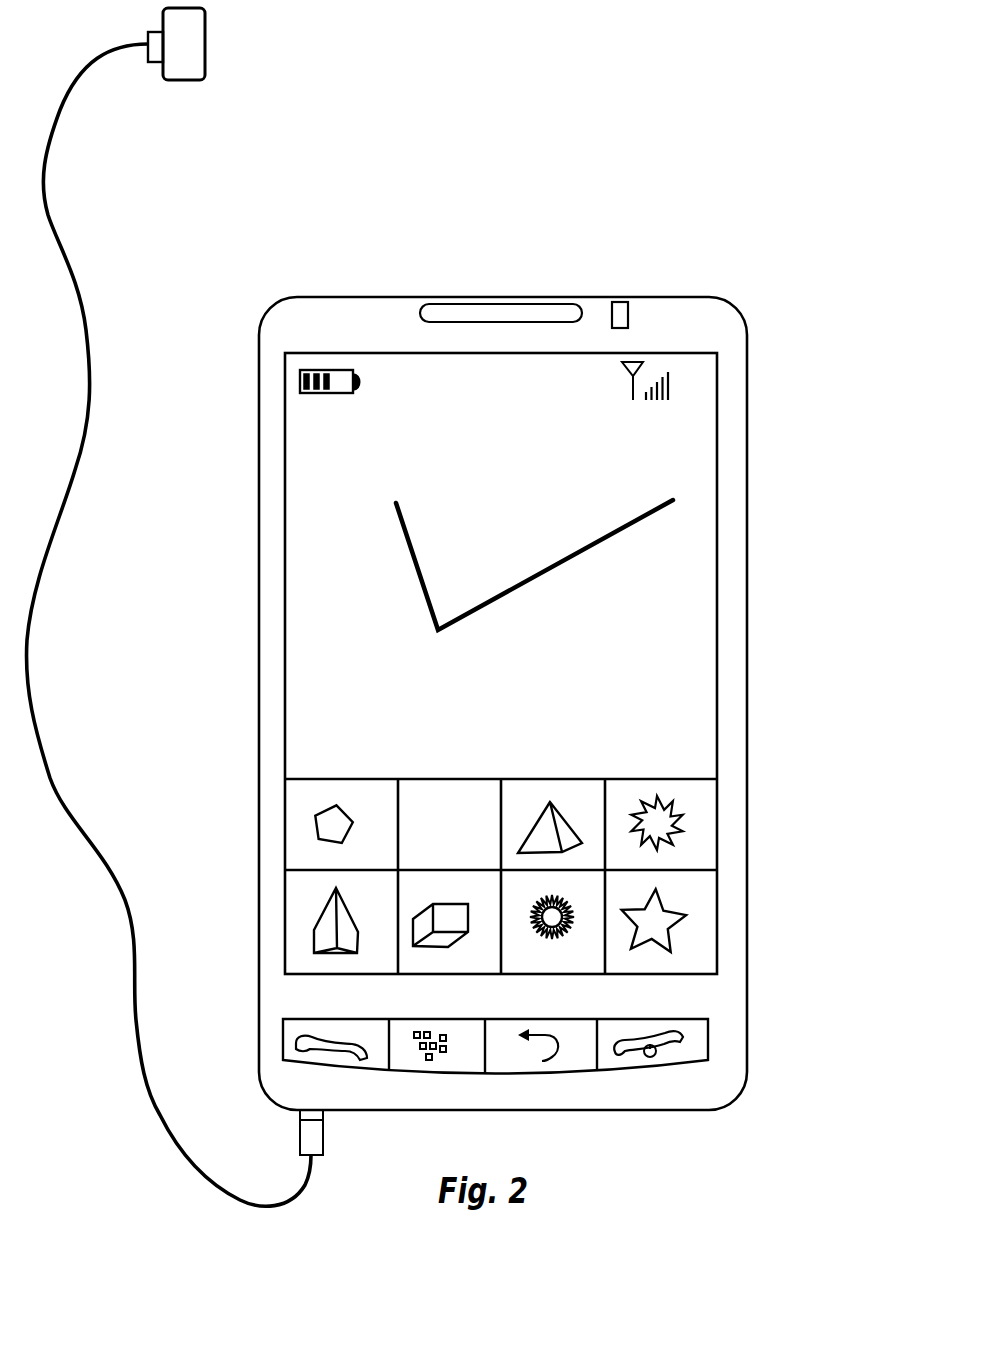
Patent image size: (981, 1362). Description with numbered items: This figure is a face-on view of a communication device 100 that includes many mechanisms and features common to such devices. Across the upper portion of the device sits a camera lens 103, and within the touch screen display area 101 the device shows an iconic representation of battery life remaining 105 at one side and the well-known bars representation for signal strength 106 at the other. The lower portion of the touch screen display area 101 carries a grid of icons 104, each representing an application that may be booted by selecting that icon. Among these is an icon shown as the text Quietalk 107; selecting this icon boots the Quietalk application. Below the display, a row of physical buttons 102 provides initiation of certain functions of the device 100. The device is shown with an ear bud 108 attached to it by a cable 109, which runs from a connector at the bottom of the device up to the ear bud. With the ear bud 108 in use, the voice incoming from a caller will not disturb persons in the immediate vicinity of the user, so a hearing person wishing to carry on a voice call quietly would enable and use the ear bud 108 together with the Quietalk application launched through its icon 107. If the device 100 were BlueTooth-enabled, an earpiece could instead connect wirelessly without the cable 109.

The device 100 is at (465, 160).
The touch screen display area 101 is at (295, 584).
The physical buttons 102 is at (725, 1043).
The camera lens 103 is at (503, 305).
The icons 104 is at (735, 840).
The iconic representation of battery life remaining 105 is at (335, 362).
The bars representation for signal strength 106 is at (657, 362).
The Quietalk icon 107 is at (433, 797).
The ear bud 108 is at (183, 80).
The cable 109 is at (26, 634).